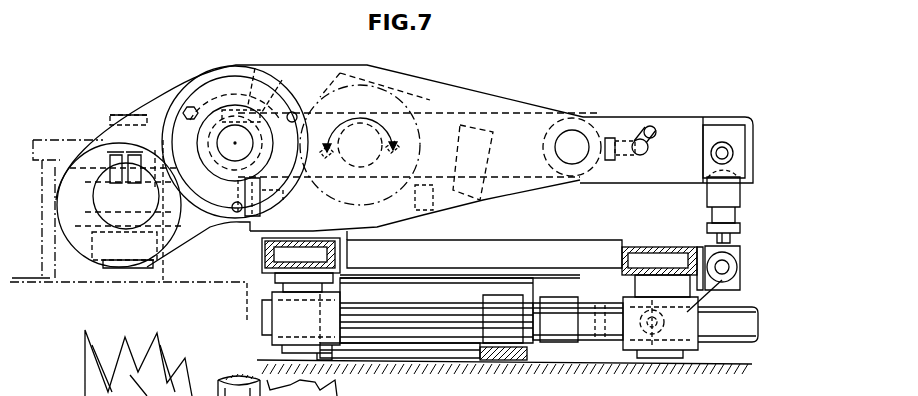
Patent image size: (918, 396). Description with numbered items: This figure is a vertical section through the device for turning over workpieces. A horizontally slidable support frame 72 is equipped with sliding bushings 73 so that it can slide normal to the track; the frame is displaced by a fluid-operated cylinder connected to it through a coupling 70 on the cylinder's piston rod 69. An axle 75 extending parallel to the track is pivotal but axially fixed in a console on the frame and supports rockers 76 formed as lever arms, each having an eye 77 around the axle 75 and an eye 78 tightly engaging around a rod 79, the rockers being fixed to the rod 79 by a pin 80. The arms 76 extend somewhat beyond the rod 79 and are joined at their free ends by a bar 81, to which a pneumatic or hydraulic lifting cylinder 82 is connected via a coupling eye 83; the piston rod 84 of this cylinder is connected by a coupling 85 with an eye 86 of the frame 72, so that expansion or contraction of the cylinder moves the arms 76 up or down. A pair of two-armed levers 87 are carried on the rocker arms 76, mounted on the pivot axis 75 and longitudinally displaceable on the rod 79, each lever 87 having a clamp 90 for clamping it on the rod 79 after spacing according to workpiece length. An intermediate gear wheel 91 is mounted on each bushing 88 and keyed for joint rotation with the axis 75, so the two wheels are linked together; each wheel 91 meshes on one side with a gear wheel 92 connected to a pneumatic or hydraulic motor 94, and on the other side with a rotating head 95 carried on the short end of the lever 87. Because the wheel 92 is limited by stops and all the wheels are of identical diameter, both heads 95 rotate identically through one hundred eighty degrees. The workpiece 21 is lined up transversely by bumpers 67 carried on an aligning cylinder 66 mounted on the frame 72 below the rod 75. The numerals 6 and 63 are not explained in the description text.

The machine frame 6 is at (190, 283).
The workpiece 21 is at (140, 375).
The support column 63 is at (53, 140).
The aligning cylinder 66 is at (423, 313).
The bumpers 67 is at (190, 210).
The piston rod 69 is at (504, 378).
The coupling 70 is at (650, 318).
The support frame 72 is at (557, 260).
The sliding bushings 73 is at (283, 313).
The axle 75 is at (235, 143).
The rockers 76 is at (670, 134).
The eye 77 is at (192, 72).
The eye 78 is at (577, 118).
The rod 79 is at (572, 147).
The pin 80 is at (550, 395).
The bar 81 is at (725, 140).
The lifting cylinder 82 is at (717, 196).
The coupling eye 83 is at (722, 160).
The piston rod 84 is at (713, 235).
The coupling 85 is at (658, 247).
The eye 86 is at (740, 272).
The two-armed lever 87 is at (487, 102).
The bushing 88 is at (232, 110).
The clamp 90 is at (648, 125).
The intermediate gear wheel 91 is at (270, 103).
The gear wheel 92 is at (413, 100).
The motor 94 is at (283, 62).
The rotating head 95 is at (102, 140).